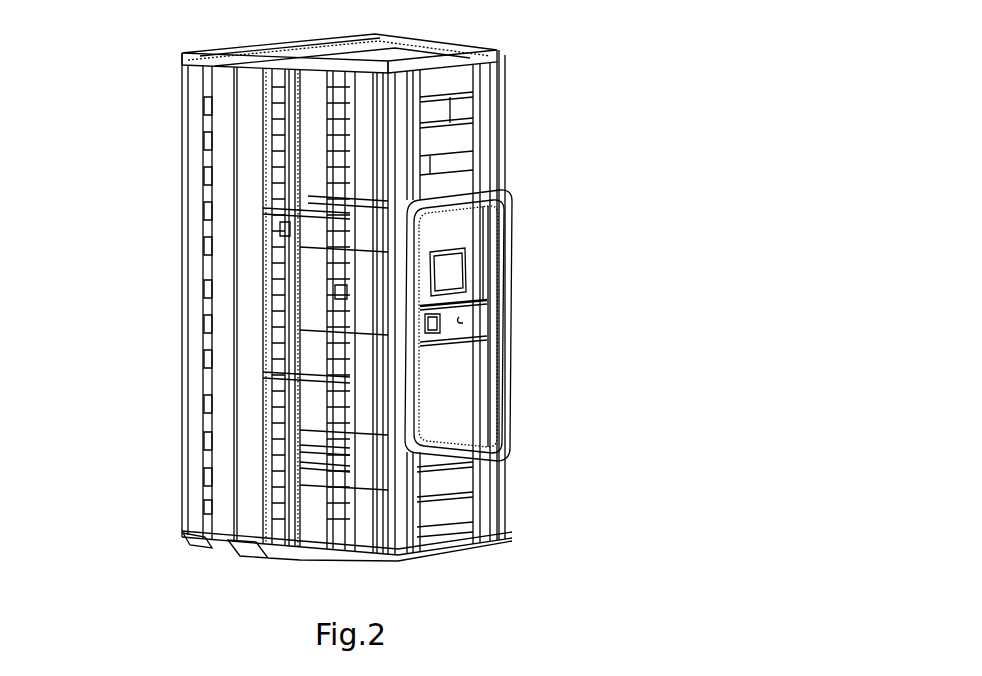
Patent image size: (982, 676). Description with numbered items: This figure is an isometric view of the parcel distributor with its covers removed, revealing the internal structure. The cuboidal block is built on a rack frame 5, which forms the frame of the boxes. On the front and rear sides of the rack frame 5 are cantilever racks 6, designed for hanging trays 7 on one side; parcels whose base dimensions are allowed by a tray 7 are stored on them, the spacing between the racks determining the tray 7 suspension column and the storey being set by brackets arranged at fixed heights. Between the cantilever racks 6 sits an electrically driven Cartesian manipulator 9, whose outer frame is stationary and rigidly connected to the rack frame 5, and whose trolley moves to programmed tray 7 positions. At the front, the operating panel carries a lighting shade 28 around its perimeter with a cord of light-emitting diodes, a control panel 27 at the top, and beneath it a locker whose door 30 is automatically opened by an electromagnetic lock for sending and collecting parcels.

The Cartesian manipulator 9 is at (216, 139).
The cantilever racks 6 is at (335, 292).
The tray 7 is at (314, 458).
The rack frame 5 is at (235, 541).
The lighting shade 28 is at (506, 222).
The control panel 27 is at (489, 267).
The door 30 is at (486, 387).